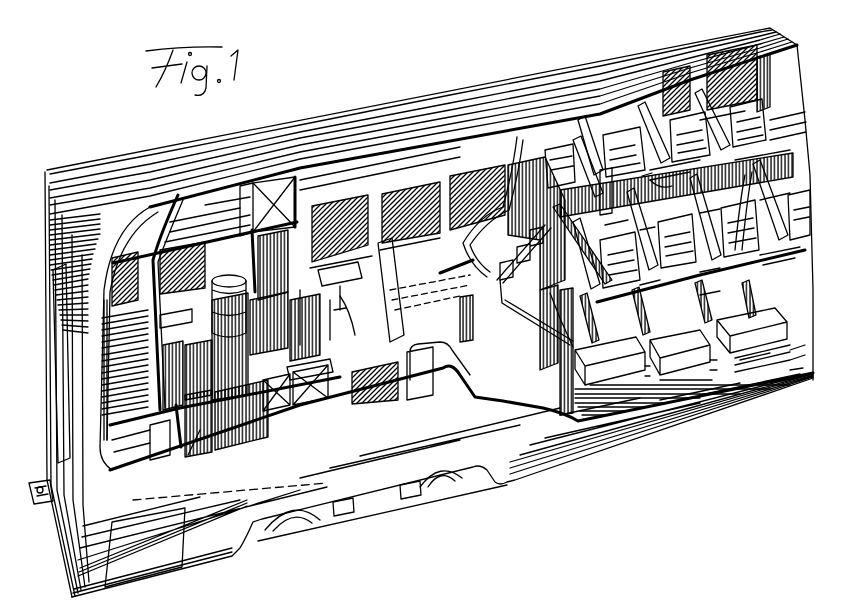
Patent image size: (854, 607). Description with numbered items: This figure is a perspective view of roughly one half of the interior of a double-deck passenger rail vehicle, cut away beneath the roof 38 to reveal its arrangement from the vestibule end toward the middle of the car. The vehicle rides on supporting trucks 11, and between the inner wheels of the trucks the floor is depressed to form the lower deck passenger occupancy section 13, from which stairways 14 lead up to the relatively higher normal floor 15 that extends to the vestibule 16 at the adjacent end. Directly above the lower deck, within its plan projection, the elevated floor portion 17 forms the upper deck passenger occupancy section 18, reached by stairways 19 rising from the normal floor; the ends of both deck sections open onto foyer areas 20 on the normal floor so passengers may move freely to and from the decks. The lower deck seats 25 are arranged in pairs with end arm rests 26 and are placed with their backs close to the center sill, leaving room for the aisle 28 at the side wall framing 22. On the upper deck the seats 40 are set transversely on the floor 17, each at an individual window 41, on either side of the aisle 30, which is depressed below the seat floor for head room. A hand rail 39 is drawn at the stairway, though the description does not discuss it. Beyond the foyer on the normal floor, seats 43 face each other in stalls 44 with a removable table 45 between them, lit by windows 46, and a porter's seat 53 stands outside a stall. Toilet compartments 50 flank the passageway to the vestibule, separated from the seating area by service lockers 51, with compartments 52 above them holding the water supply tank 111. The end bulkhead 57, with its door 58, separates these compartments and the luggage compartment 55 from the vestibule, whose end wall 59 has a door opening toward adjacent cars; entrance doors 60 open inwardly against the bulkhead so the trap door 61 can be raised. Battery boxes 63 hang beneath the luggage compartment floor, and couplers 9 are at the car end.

The roof 38 is at (400, 112).
The vestibule end wall 59 is at (72, 533).
The couplers 9 is at (43, 507).
The doors 60 is at (112, 339).
The trap door 61 is at (112, 360).
The water supply tank 111 is at (204, 217).
The end bulkhead 57 is at (179, 196).
The compartments 52 is at (262, 195).
The service lockers 51 is at (268, 245).
The windows 46 is at (397, 200).
The windows 41 is at (712, 75).
The upper deck passenger occupancy section 18 is at (757, 98).
The upper deck seats 40 is at (614, 133).
The elevated floor portion 17 is at (752, 147).
The aisle 30 is at (745, 175).
The end arm rests 26 is at (657, 175).
The porter's seat 53 is at (408, 272).
The removable table 45 is at (362, 262).
The seats 43 is at (300, 302).
The stairways 19 is at (462, 320).
The foyer areas 20 is at (472, 332).
The hand rail 39 is at (533, 333).
The normal floor 15 is at (273, 447).
The toilet compartments 50 is at (233, 448).
The vestibule 16 is at (119, 370).
The stalls 44 is at (320, 392).
The luggage compartment 55 is at (125, 466).
The door 58 is at (158, 440).
The stairways 14 is at (570, 430).
The boxes 63 is at (128, 567).
The supporting trucks 11 is at (443, 493).
The side wall framing 22 is at (637, 417).
The aisles 28 is at (700, 390).
The lower deck passenger occupancy section 13 is at (710, 378).
The lower deck seats 25 is at (762, 352).